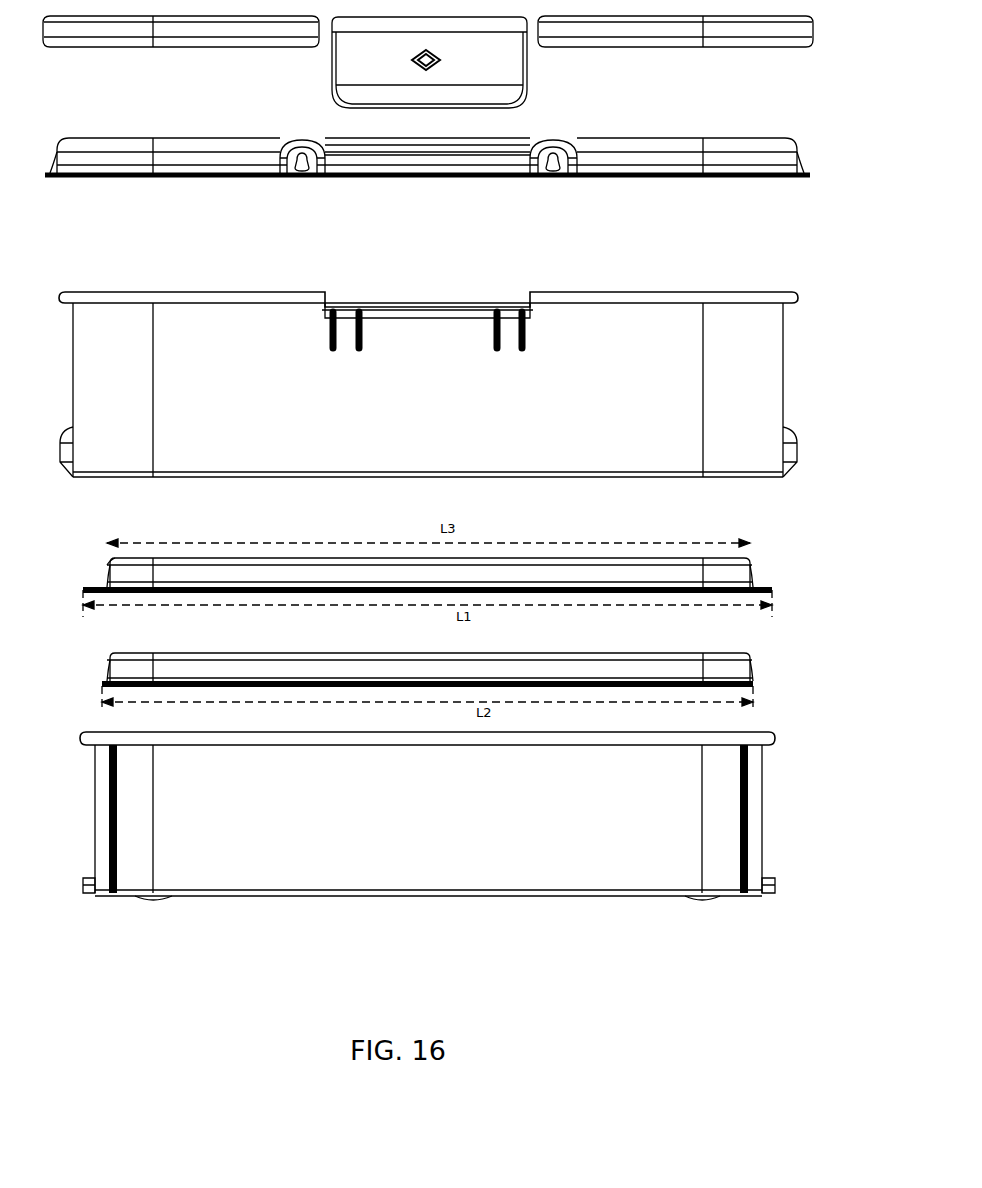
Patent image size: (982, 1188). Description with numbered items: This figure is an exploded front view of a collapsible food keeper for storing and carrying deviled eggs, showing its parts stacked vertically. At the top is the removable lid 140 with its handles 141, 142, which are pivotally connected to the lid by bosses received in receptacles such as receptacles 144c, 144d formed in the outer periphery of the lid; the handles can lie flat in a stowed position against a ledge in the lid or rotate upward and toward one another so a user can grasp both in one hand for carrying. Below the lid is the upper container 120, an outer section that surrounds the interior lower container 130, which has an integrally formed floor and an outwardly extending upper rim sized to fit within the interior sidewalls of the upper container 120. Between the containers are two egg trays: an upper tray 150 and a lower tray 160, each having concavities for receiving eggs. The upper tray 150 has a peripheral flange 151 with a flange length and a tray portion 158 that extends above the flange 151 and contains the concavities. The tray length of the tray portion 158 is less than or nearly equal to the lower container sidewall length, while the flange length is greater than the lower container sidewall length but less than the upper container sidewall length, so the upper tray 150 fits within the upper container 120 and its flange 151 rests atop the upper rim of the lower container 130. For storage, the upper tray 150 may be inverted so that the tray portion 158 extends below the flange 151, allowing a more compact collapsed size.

The upper container 120 is at (780, 368).
The lower container 130 is at (764, 818).
The removable lid 140 is at (800, 150).
The handle 141 is at (767, 43).
The handle 142 is at (108, 40).
The receptacle 144c is at (297, 176).
The receptacle 144d is at (556, 176).
The upper tray 150 is at (770, 572).
The peripheral flange 151 is at (772, 590).
The tray portion 158 is at (112, 570).
The lower tray 160 is at (752, 660).